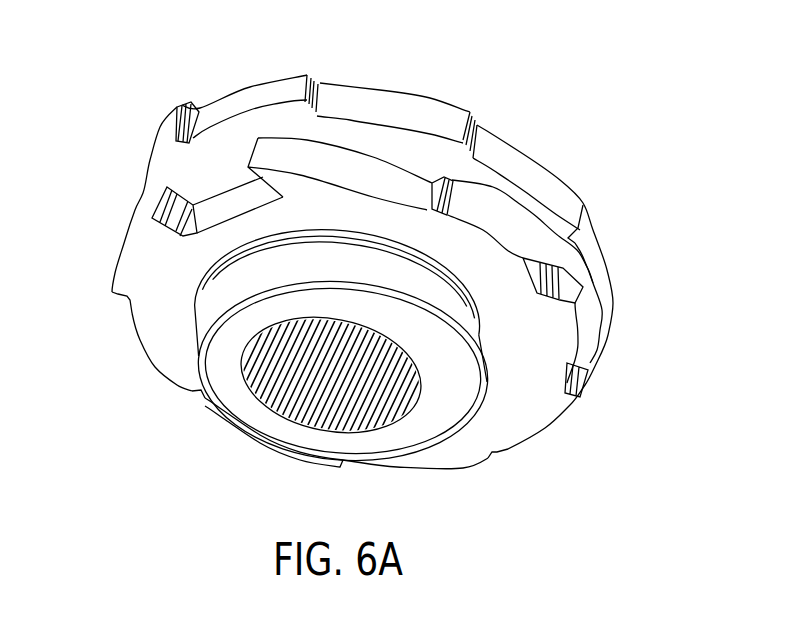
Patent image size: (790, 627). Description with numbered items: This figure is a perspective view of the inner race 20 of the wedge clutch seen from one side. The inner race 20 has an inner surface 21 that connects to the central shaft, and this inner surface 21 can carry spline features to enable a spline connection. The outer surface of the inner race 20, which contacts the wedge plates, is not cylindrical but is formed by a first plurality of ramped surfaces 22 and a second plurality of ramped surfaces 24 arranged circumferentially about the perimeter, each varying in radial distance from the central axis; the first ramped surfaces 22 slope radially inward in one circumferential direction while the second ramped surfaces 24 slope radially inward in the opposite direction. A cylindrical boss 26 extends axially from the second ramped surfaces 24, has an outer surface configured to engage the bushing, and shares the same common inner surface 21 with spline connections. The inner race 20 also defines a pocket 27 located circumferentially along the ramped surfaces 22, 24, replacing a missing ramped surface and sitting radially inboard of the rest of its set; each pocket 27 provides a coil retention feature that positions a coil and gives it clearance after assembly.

The inner race 20 is at (600, 100).
The inner surface 21 is at (278, 397).
The first plurality of ramped surfaces 22 is at (578, 205).
The second plurality of ramped surfaces 24 is at (523, 258).
The cylindrical boss 26 is at (237, 275).
The pocket 27 is at (228, 203).